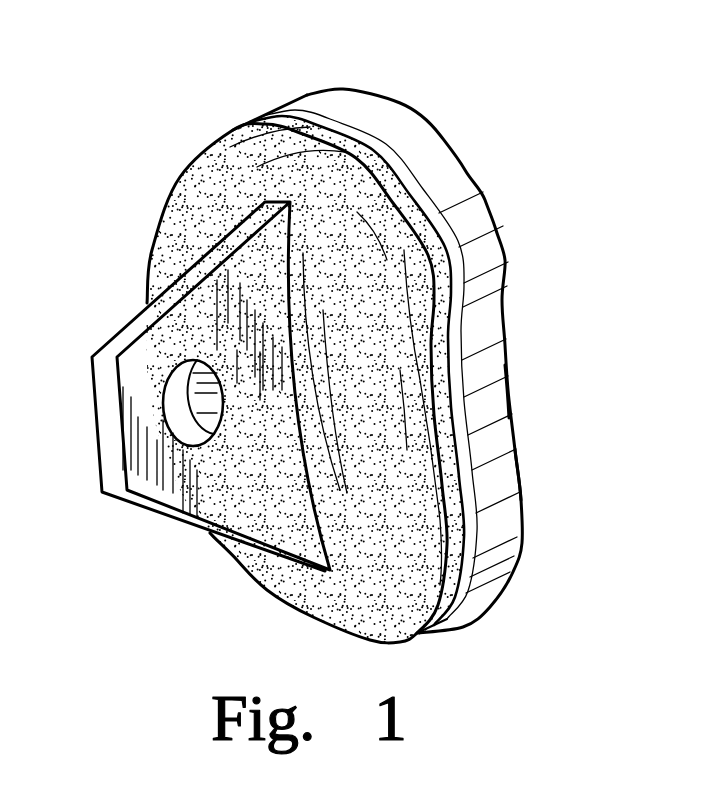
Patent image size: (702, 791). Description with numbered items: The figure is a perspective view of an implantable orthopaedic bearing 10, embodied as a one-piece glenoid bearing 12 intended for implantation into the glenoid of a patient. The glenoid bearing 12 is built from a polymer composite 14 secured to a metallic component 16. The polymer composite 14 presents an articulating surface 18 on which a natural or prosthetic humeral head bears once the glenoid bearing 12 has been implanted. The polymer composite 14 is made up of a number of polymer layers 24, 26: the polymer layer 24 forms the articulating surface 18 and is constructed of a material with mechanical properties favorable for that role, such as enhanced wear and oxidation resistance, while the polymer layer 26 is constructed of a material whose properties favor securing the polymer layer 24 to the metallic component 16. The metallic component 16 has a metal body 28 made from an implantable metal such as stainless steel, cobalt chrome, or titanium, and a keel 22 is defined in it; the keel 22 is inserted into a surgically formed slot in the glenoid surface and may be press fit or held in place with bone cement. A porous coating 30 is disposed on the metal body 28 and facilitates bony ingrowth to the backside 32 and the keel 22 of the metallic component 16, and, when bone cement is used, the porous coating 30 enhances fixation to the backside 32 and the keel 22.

The implantable orthopaedic bearing 10 is at (180, 108).
The glenoid bearing 12 is at (441, 120).
The polymer composite 14 is at (450, 180).
The metallic component 16 is at (200, 176).
The articulating surface 18 is at (507, 413).
The keel 22 is at (148, 487).
The polymer layer 24 is at (503, 488).
The polymer layer 26 is at (312, 112).
The metal body 28 is at (417, 633).
The porous coating 30 is at (378, 533).
The backside 32 is at (162, 262).